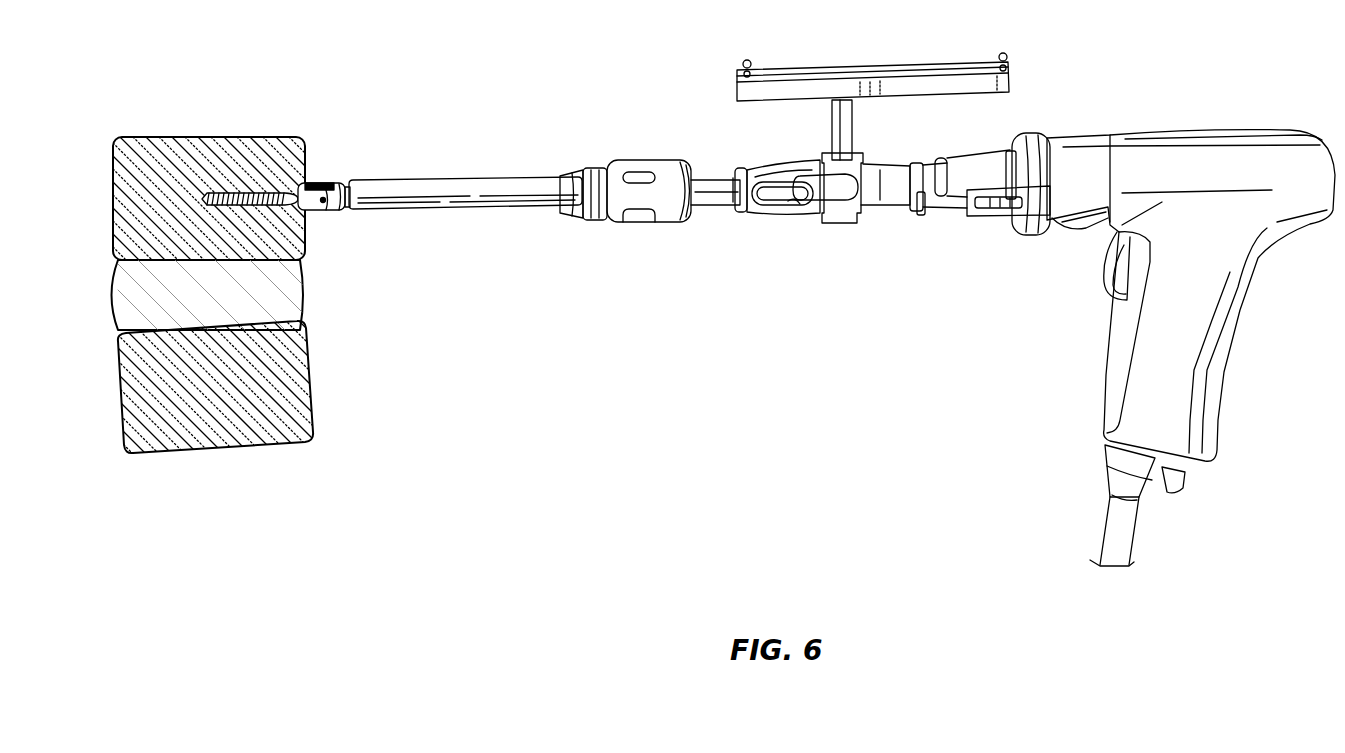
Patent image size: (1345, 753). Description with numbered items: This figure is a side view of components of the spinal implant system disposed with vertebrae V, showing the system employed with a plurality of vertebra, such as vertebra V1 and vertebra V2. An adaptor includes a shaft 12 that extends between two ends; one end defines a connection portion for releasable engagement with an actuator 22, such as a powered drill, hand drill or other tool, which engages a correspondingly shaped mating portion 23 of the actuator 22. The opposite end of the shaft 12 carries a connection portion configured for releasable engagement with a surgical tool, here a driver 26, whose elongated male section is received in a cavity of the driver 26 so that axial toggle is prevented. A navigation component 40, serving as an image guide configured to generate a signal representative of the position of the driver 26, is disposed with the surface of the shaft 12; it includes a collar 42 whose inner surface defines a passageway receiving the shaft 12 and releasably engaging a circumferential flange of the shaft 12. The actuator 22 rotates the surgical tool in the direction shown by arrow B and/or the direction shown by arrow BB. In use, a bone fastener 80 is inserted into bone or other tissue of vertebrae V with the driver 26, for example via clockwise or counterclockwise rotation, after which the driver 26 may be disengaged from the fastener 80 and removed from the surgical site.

The shaft 12 is at (705, 185).
The actuator 22 is at (1219, 317).
The mating portion 23 is at (985, 165).
The driver 26 is at (415, 215).
The navigation component 40 is at (870, 57).
The collar 42 is at (833, 178).
The bone fastener 80 is at (300, 212).
The vertebra V1 is at (287, 153).
The vertebra V2 is at (298, 410).
The vertebrae V is at (348, 312).
The arrow B is at (292, 40).
The arrow BB is at (270, 40).